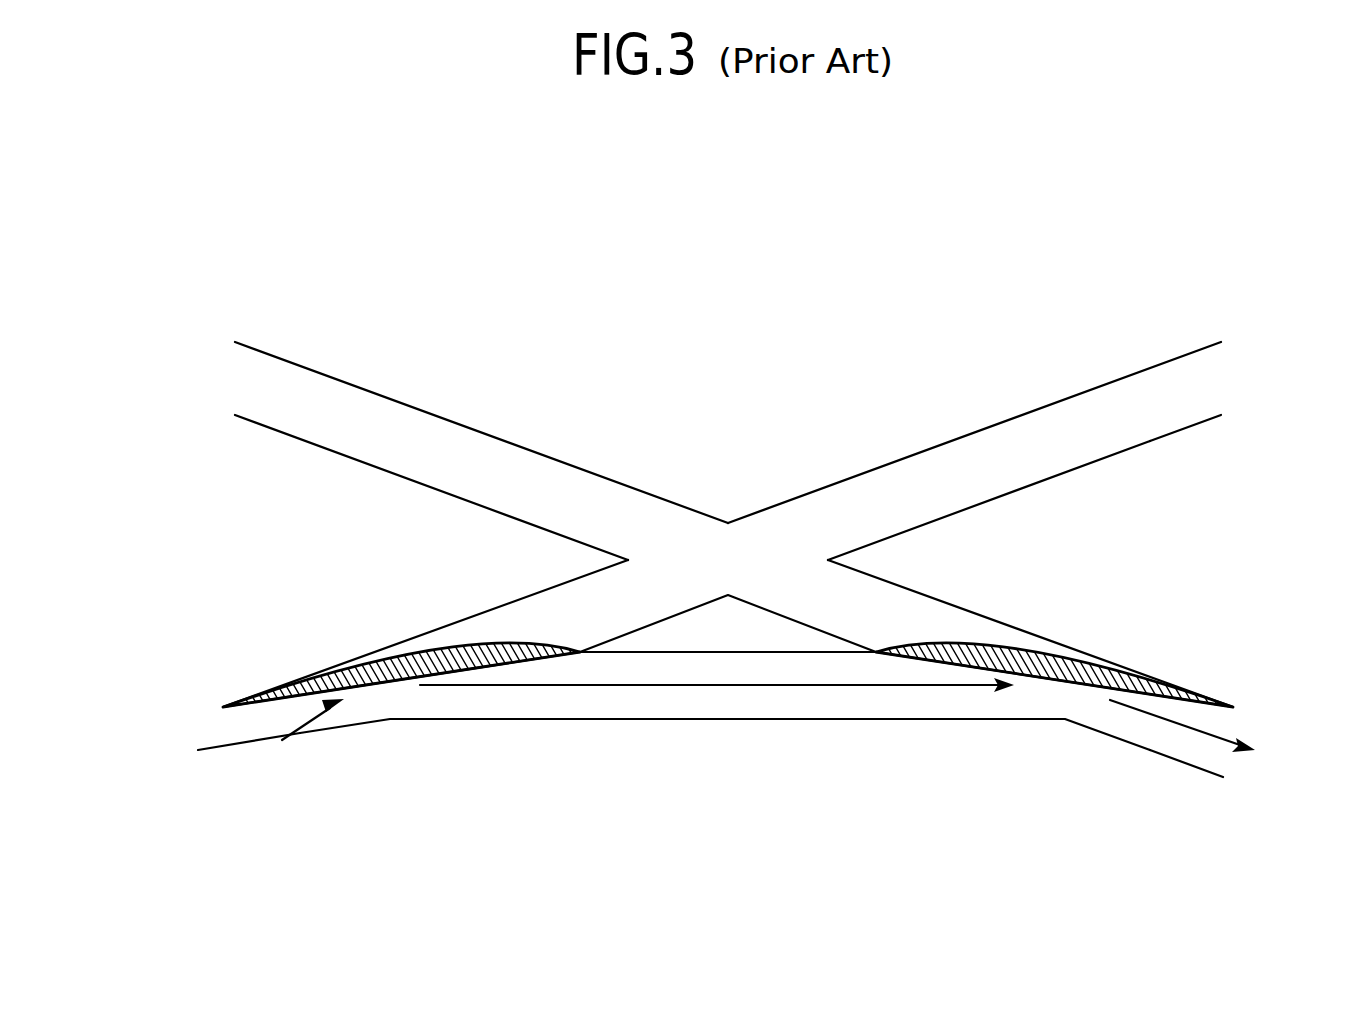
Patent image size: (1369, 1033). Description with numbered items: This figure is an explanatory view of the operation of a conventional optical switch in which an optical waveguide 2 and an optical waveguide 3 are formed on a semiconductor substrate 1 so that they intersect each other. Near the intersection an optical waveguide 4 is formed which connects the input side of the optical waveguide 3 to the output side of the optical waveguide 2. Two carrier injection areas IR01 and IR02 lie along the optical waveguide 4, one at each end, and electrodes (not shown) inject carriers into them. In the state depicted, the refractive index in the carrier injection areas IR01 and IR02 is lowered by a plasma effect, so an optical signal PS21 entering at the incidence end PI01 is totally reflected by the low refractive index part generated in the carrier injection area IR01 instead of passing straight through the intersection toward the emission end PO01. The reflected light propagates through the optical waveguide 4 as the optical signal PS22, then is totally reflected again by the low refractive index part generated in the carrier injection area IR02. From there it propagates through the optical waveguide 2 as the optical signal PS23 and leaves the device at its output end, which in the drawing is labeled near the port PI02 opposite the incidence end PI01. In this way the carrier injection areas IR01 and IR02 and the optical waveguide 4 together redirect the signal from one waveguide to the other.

The semiconductor substrate 1 is at (728, 475).
The optical waveguide 2 is at (375, 407).
The optical waveguide 3 is at (1123, 397).
The optical waveguide 4 is at (548, 702).
The carrier injection area IR01 is at (337, 663).
The carrier injection area IR02 is at (1122, 665).
The incidence end PI01 is at (247, 720).
The input port PI02 is at (1227, 765).
The emission end PO01 is at (1208, 402).
The optical signal PS21 is at (207, 748).
The optical signal PS22 is at (808, 687).
The optical signal PS23 is at (1280, 700).